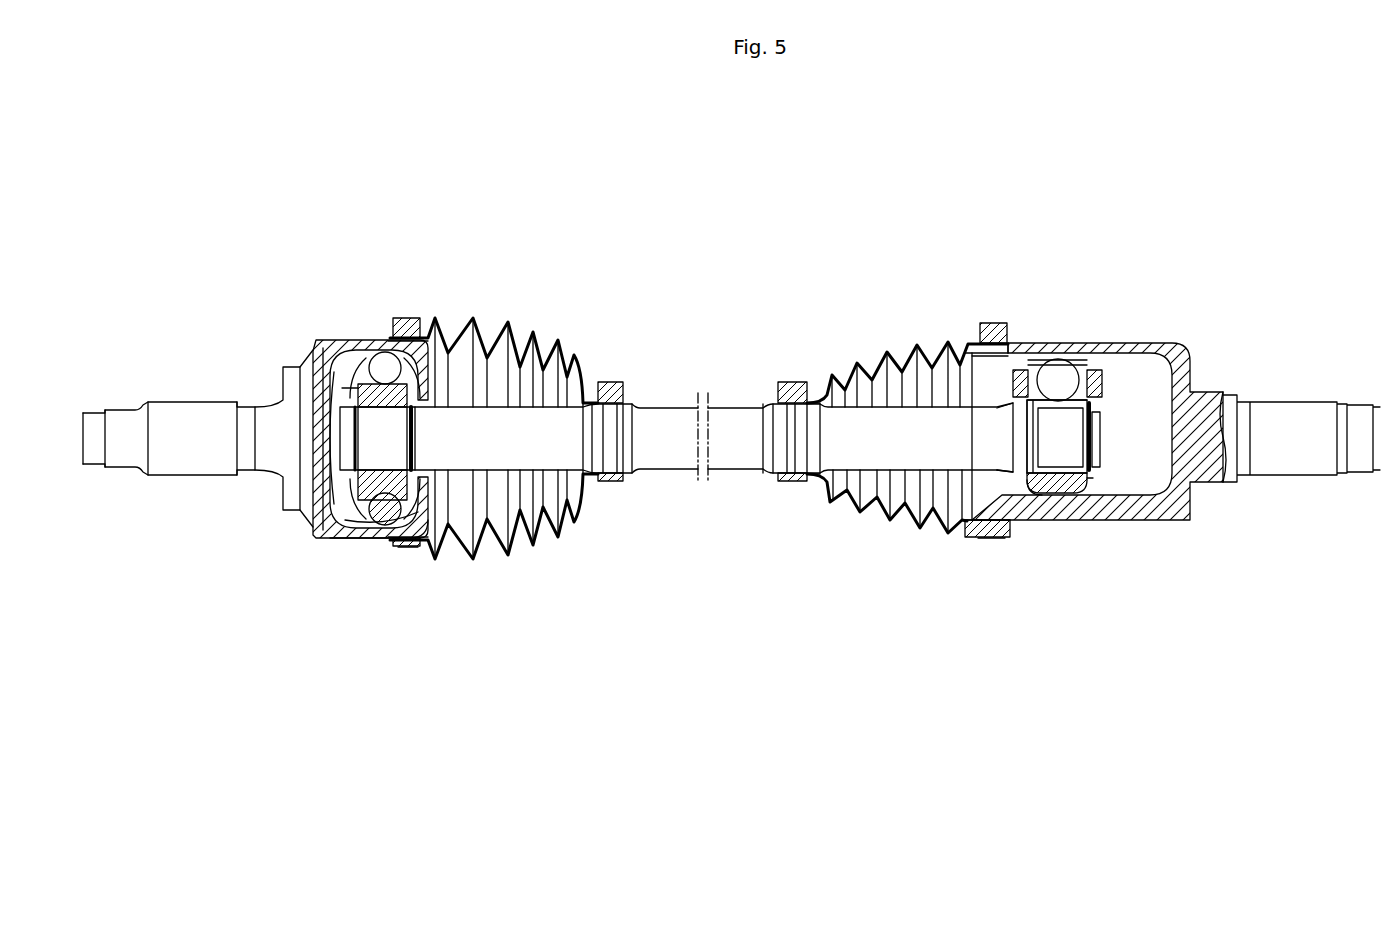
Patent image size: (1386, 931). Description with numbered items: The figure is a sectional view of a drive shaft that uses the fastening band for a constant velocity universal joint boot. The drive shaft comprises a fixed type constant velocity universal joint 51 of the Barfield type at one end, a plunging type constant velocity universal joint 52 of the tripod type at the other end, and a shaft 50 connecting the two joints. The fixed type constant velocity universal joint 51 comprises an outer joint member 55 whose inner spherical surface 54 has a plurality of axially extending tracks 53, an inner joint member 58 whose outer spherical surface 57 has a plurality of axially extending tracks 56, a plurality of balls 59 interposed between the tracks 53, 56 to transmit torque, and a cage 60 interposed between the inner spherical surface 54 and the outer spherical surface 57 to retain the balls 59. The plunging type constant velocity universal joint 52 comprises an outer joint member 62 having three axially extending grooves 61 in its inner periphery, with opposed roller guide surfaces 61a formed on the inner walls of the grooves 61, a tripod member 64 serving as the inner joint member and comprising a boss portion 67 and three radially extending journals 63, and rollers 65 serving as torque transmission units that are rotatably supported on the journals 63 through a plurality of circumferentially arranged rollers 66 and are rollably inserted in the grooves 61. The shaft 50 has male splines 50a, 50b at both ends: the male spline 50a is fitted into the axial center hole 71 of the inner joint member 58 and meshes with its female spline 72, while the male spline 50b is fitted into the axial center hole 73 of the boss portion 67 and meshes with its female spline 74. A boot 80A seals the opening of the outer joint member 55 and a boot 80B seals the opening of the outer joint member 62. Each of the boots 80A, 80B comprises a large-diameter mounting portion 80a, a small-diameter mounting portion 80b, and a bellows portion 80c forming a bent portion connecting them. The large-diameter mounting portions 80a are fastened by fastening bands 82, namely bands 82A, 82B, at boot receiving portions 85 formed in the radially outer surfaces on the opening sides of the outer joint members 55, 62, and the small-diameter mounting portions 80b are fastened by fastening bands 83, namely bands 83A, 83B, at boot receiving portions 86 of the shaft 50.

The shaft 50 is at (722, 400).
The male spline 50a is at (358, 388).
The male spline 50b is at (1093, 481).
The fixed type constant velocity universal joint 51 is at (281, 430).
The plunging type constant velocity universal joint 52 is at (1168, 401).
The tracks 53 is at (355, 362).
The inner spherical surface 54 is at (363, 522).
The outer joint member 55 is at (368, 540).
The tracks 56 is at (412, 387).
The outer spherical surface 57 is at (417, 541).
The inner joint member 58 is at (418, 494).
The balls 59 is at (383, 358).
The cage 60 is at (327, 516).
The grooves 61 is at (1097, 404).
The roller guide surfaces 61a is at (1010, 346).
The outer joint member 62 is at (1112, 522).
The journals 63 is at (1058, 372).
The tripod member 64 is at (1047, 503).
The rollers 65 is at (1092, 372).
The rollers 66 is at (1000, 420).
The boss portion 67 is at (1070, 494).
The axial center hole 71 is at (377, 438).
The female spline 72 is at (411, 430).
The axial center hole 73 is at (1057, 436).
The female spline 74 is at (1096, 423).
The boot 80A is at (512, 312).
The boot 80B is at (882, 338).
The large-diameter mounting portion 80a is at (413, 321).
The small-diameter mounting portion 80b is at (609, 381).
The bellows portion 80c is at (522, 552).
The fastening bands 82 is at (728, 478).
The fastening band 82A is at (408, 547).
The fastening band 82B is at (1002, 540).
The fastening bands 83 is at (716, 460).
The fastening band 83A is at (609, 481).
The fastening band 83B is at (790, 483).
The boot receiving portions 85 is at (397, 545).
The boot receiving portions 86 is at (628, 422).